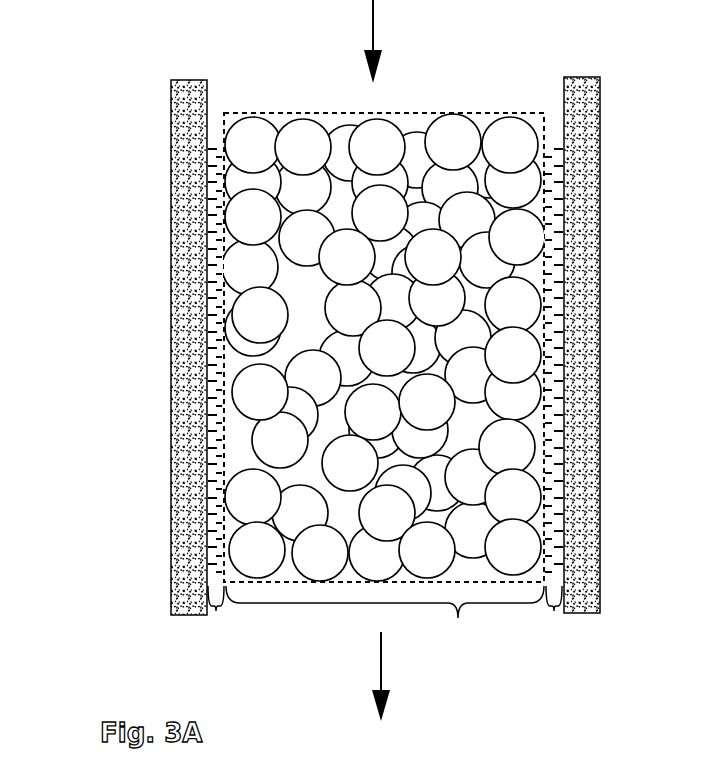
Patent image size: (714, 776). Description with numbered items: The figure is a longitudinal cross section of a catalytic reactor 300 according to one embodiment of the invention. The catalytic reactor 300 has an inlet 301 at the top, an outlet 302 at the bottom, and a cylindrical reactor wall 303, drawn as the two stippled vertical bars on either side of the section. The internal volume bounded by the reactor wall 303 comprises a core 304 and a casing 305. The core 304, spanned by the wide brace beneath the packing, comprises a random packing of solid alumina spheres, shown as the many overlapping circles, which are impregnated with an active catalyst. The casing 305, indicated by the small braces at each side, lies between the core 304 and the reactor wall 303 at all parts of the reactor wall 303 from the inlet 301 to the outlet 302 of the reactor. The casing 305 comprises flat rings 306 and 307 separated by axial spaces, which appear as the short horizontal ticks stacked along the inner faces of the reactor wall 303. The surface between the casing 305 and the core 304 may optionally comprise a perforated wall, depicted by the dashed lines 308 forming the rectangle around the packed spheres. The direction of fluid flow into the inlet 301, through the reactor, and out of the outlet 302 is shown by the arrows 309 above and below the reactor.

The catalytic reactor 300 is at (365, 361).
The inlet 301 is at (437, 79).
The outlet 302 is at (312, 643).
The cylindrical reactor wall 303 is at (188, 138).
The core 304 is at (385, 617).
The casing 305 is at (391, 620).
The flat ring 306 is at (550, 277).
The flat ring 307 is at (560, 317).
The dashed lines depicting perforated wall 308 is at (540, 120).
The arrows 309 is at (366, 17).